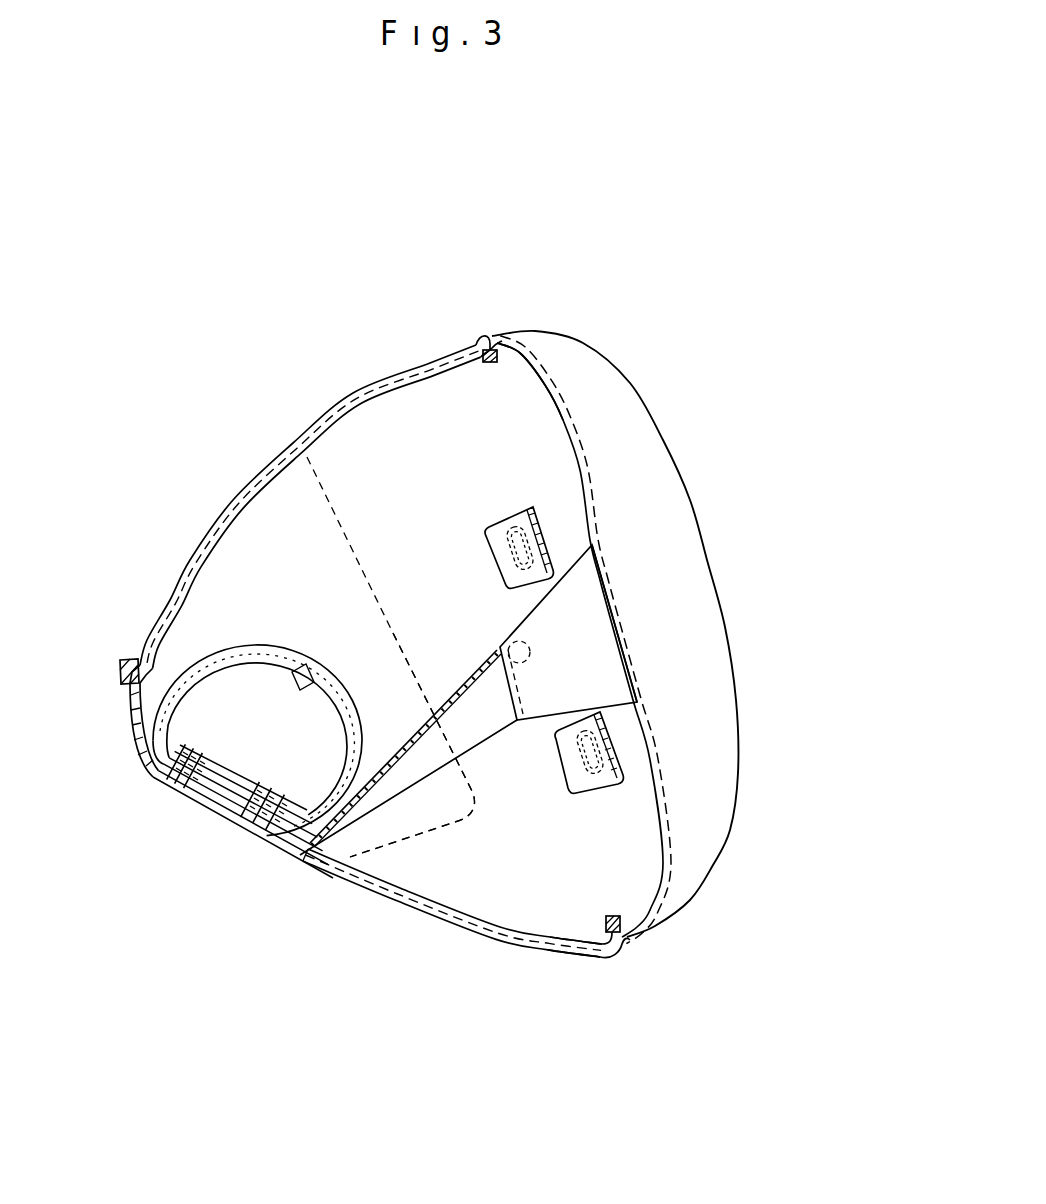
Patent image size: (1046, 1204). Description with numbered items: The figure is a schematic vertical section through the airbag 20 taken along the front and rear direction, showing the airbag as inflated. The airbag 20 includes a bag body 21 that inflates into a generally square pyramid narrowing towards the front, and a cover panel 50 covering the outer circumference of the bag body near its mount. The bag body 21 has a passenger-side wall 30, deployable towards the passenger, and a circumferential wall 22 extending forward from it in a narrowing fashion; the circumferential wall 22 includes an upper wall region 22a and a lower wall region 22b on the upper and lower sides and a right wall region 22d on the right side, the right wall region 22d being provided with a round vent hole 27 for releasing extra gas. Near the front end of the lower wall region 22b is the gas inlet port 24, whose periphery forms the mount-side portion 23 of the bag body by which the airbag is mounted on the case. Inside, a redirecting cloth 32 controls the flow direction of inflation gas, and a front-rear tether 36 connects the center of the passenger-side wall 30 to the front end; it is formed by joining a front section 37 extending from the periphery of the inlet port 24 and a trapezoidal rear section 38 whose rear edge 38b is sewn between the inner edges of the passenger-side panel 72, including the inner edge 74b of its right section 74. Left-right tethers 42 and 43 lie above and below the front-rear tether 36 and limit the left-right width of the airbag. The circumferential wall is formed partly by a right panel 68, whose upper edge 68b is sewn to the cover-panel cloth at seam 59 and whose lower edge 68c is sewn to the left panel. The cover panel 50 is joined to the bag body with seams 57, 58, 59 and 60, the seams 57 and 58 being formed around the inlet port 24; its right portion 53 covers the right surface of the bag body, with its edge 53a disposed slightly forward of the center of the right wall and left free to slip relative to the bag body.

The airbag 20 is at (658, 242).
The bag body 21 is at (447, 334).
The circumferential wall 22 is at (356, 376).
The upper wall region 22a is at (409, 378).
The lower wall region 22b is at (465, 928).
The right wall region 22d is at (565, 912).
The mount-side portion 23 is at (350, 884).
The gas inlet port 24 is at (228, 815).
The vent hole 27 is at (530, 660).
The passenger-side wall 30 is at (643, 396).
The redirecting cloth 32 is at (265, 640).
The front-rear tether 36 is at (575, 815).
The front section 37 is at (487, 726).
The rear section 38 is at (545, 700).
The rear edge 38b is at (607, 620).
The left-right tether 42 is at (506, 500).
The left-right tether 43 is at (607, 796).
The cover panel 50 is at (218, 498).
The right portion 53 is at (350, 587).
The edge 53a is at (395, 633).
The seam 57 is at (245, 845).
The seam 58 is at (272, 860).
The seam 59 is at (345, 415).
The seam 60 is at (135, 655).
The right panel 68 is at (462, 381).
The upper edge 68b is at (487, 425).
The lower edge 68c is at (445, 914).
The passenger-side panel 72 is at (615, 634).
The right section 74 is at (640, 452).
The inner edge 74b is at (563, 423).